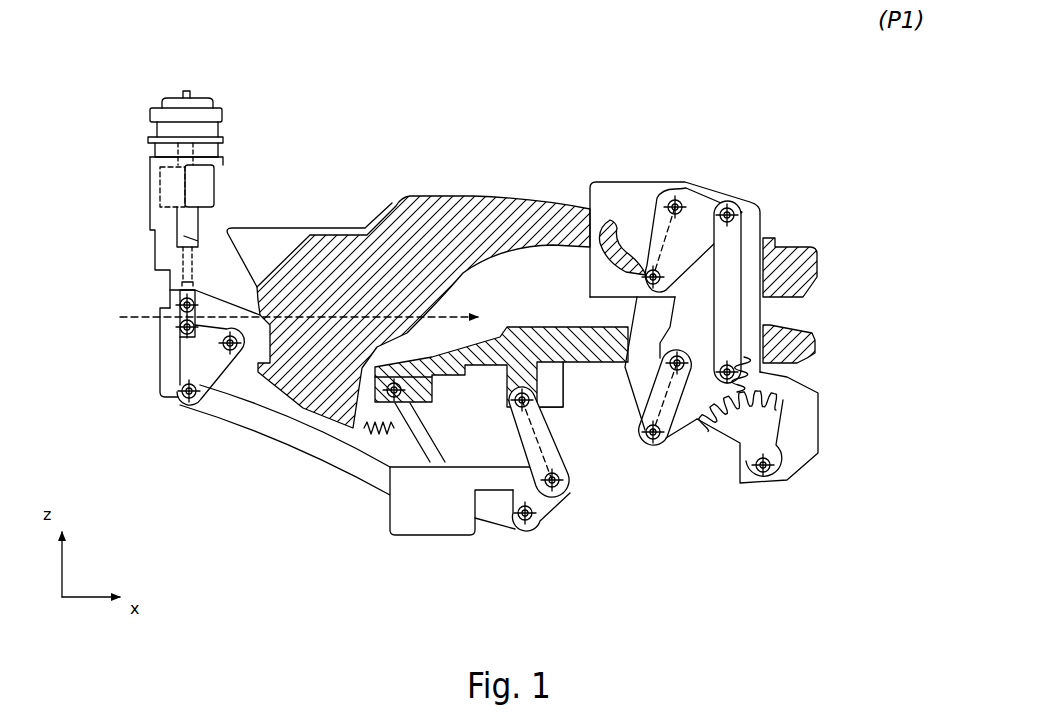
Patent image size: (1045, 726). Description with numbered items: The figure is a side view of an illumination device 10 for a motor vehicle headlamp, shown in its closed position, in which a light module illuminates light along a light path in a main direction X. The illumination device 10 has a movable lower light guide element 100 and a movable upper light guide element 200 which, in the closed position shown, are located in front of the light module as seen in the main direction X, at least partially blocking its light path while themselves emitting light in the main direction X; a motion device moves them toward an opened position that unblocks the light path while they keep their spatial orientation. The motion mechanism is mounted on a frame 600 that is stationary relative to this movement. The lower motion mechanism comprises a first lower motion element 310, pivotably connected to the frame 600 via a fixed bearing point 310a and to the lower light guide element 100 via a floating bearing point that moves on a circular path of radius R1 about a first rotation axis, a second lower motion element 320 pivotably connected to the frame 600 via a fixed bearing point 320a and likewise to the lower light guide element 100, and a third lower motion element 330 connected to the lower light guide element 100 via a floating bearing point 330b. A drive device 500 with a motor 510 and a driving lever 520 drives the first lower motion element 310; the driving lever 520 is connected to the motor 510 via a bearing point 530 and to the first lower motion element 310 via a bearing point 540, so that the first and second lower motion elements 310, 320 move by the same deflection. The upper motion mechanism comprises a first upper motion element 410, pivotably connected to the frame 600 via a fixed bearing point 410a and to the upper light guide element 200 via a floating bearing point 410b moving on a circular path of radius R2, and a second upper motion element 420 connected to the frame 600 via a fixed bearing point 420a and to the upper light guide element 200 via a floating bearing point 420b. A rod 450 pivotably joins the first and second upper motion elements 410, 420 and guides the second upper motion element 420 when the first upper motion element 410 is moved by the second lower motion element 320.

The illumination device 10 is at (130, 80).
The lower light guide element 100 is at (783, 343).
The upper light guide element 200 is at (646, 321).
The first lower motion element 310 is at (563, 449).
The fixed bearing point 310a is at (565, 490).
The second lower motion element 320 is at (760, 421).
The fixed bearing point 320a is at (772, 466).
The third lower motion element 330 is at (398, 437).
The floating bearing point 330b is at (352, 424).
The first upper motion element 410 is at (697, 400).
The fixed bearing point 410a is at (670, 322).
The floating bearing point 410b is at (665, 439).
The second upper motion element 420 is at (702, 210).
The fixed bearing point 420a is at (679, 201).
The floating bearing point 420b is at (646, 271).
The rod 450 is at (729, 281).
The drive device 500 is at (135, 137).
The motor 510 is at (203, 181).
The driving lever 520 is at (381, 472).
The bearing point 530 is at (177, 407).
The bearing point 540 is at (526, 532).
The frame 600 is at (470, 482).
The radius R1 is at (534, 430).
The radius R2 is at (660, 234).
The main direction X is at (120, 305).